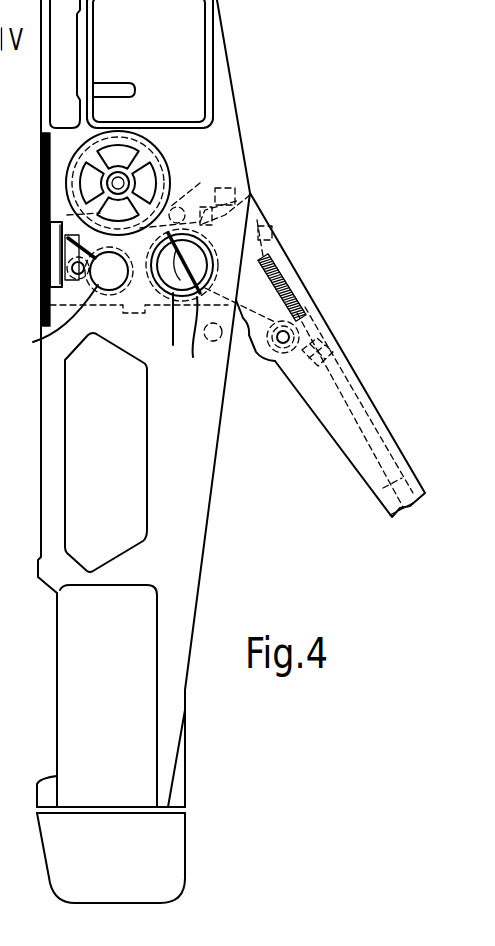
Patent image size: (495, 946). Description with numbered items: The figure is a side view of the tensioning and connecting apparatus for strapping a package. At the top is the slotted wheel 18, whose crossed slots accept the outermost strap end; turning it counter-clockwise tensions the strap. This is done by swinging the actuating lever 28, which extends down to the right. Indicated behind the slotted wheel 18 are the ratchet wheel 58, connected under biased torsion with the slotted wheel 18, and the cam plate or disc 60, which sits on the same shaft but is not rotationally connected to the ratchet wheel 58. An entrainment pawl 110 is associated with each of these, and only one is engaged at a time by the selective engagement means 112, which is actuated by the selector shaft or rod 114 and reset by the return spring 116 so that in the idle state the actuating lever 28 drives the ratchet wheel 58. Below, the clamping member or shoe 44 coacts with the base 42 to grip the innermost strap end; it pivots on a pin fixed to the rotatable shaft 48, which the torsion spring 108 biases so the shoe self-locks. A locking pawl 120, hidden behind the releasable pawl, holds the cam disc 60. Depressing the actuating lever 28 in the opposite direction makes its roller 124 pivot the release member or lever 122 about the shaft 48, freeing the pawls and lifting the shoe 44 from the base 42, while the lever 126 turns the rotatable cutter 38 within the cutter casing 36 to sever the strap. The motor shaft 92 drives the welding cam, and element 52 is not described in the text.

The slotted wheel 18 is at (88, 165).
The actuating lever 28 is at (340, 428).
The cutter casing 36 is at (202, 342).
The rotatable cutter 38 is at (182, 310).
The base 42 is at (71, 268).
The clamping member or shoe 44 is at (75, 250).
The rotatable shaft 48 is at (52, 323).
The side plate 52 is at (25, 229).
The ratchet wheel 58 is at (117, 260).
The cam plate or disc 60 is at (163, 160).
The shaft 92 is at (38, 77).
The torsion spring 108 is at (50, 305).
The entrainment pawl 110 is at (200, 183).
The selective engagement means 112 is at (250, 195).
The switching or selector shaft or rod 114 is at (385, 495).
The return spring 116 is at (290, 260).
The locking pawl 120 is at (72, 220).
The release member or lever 122 is at (158, 323).
The roller 124 is at (270, 228).
The lever 126 is at (228, 345).